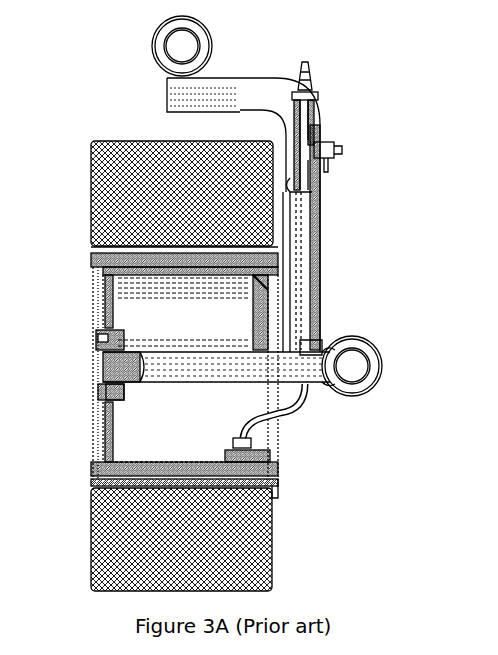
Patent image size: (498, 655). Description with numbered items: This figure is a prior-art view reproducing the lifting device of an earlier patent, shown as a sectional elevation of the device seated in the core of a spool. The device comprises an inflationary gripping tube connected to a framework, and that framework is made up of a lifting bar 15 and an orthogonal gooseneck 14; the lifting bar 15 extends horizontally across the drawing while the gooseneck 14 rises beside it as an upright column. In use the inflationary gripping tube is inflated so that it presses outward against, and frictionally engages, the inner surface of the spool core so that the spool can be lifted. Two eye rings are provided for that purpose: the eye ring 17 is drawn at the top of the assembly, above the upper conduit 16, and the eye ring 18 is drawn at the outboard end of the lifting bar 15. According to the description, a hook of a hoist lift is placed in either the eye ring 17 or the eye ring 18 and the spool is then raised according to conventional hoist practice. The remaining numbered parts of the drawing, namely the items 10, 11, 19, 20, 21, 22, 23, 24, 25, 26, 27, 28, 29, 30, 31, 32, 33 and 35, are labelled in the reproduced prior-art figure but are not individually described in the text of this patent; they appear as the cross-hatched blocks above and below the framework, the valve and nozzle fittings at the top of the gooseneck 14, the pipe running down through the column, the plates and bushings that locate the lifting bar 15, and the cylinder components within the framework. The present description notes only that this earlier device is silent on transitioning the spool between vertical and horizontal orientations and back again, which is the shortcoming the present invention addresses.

The pump unit 10 is at (341, 240).
The lower block 11 is at (280, 544).
The gooseneck 14 is at (322, 300).
The lifting bar 15 is at (205, 352).
The upper conduit 16 is at (255, 80).
The eye ring 17 is at (208, 40).
The eye ring 18 is at (374, 352).
The nut 19 is at (318, 96).
The nozzle 20 is at (312, 72).
The valve body 21 is at (316, 132).
The valve handle 22 is at (344, 160).
The base plate 23 is at (199, 462).
The pipe 24 is at (314, 222).
The bottom plate 25 is at (145, 462).
The thin plate 26 is at (278, 482).
The pipe fitting 27 is at (270, 460).
The cylinder wall 28 is at (262, 328).
The cylinder liner 29 is at (196, 276).
The cylinder cap 30 is at (254, 280).
The side plate 31 is at (93, 312).
The bushing 32 is at (98, 341).
The nut 33 is at (126, 388).
The upper block 35 is at (92, 244).